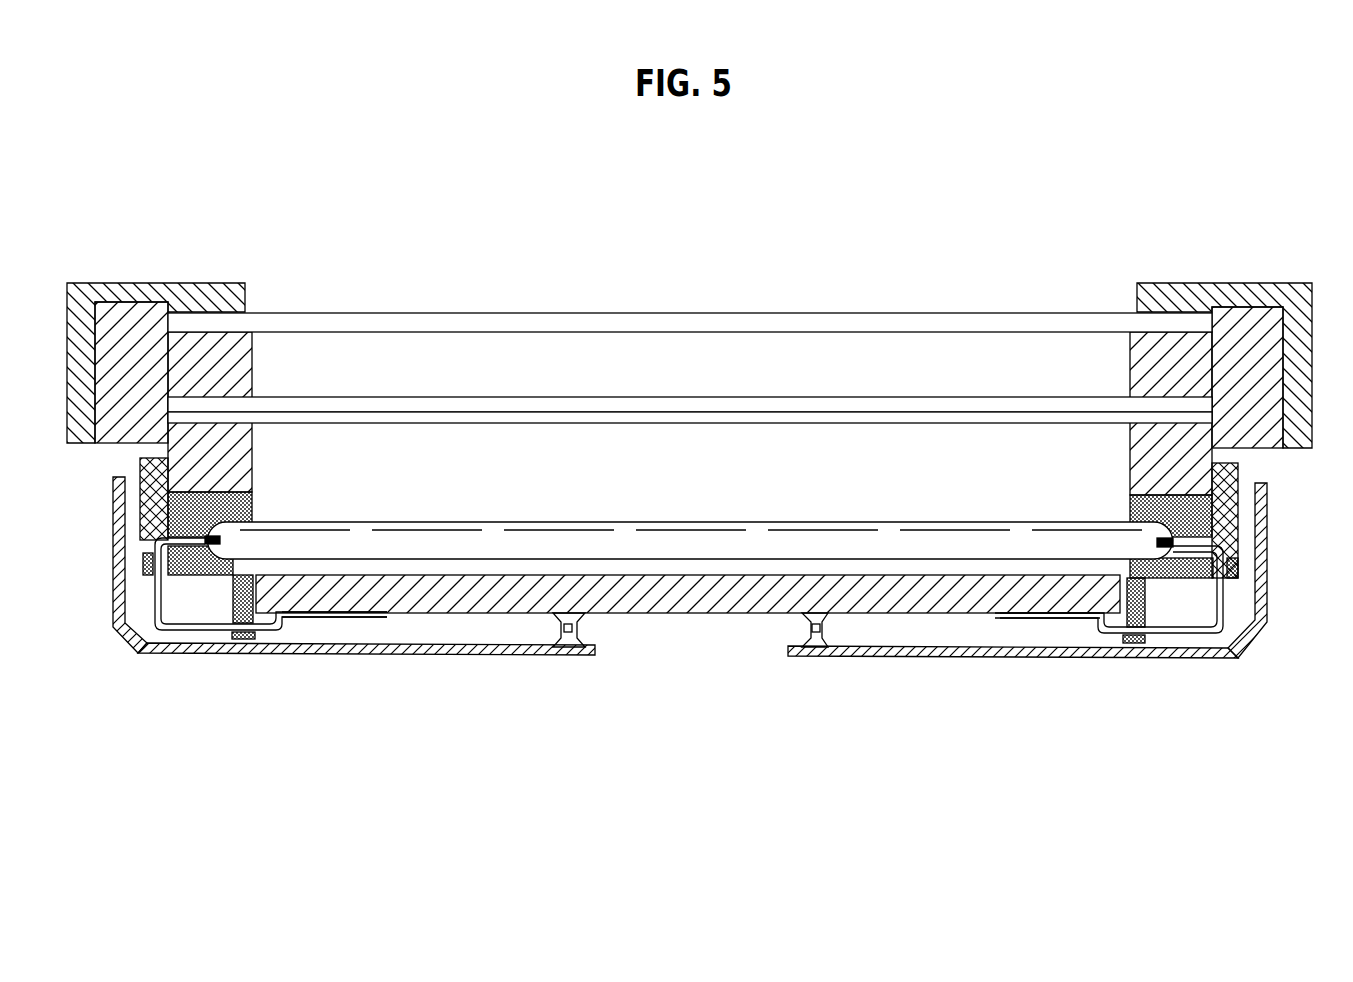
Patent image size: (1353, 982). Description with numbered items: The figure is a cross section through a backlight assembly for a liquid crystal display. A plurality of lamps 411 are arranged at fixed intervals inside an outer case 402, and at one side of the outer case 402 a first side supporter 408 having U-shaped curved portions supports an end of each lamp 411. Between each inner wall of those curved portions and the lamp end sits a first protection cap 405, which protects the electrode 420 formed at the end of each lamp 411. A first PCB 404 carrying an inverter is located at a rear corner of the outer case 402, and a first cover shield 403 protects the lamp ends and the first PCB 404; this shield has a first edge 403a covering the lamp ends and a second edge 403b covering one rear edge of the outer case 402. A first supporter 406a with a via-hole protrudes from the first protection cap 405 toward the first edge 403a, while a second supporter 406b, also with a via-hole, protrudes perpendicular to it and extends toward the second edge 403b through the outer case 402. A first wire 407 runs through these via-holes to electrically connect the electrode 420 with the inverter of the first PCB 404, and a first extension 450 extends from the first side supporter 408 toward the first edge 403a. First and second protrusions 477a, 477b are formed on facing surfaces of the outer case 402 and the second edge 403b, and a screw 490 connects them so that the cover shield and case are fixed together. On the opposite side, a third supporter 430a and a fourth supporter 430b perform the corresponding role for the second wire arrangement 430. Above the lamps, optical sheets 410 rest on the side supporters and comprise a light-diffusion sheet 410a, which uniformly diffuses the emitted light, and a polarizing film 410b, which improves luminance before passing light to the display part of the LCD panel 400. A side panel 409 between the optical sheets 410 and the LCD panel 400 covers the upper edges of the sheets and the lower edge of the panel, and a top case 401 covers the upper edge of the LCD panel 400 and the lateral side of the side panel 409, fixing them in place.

The LCD panel 400 is at (841, 326).
The top case 401 is at (1236, 283).
The outer case 402 is at (675, 598).
The first cover shield 403 is at (696, 610).
The first edge of first cover shield 403a is at (1258, 626).
The second edge of first cover shield 403b is at (688, 674).
The first PCB 404 is at (1023, 618).
The first protection cap 405 is at (1140, 508).
The first supporter 406a is at (1232, 568).
The second supporter 406b is at (1135, 645).
The first wire 407 is at (1220, 600).
The first side supporter 408 is at (1140, 463).
The side panel 409 is at (1265, 447).
The optical sheets 410 is at (690, 311).
The light-diffusion sheet 410a is at (572, 402).
The polarizing film 410b is at (638, 418).
The lamp 411 is at (625, 547).
The electrode 420 is at (1173, 541).
The lamp wire clip 430 is at (209, 638).
The third supporter 430a is at (145, 570).
The fourth supporter 430b is at (247, 640).
The first extension 450 is at (1235, 528).
The first protrusion 477a is at (800, 640).
The second protrusion 477b is at (812, 622).
The screw 490 is at (816, 636).